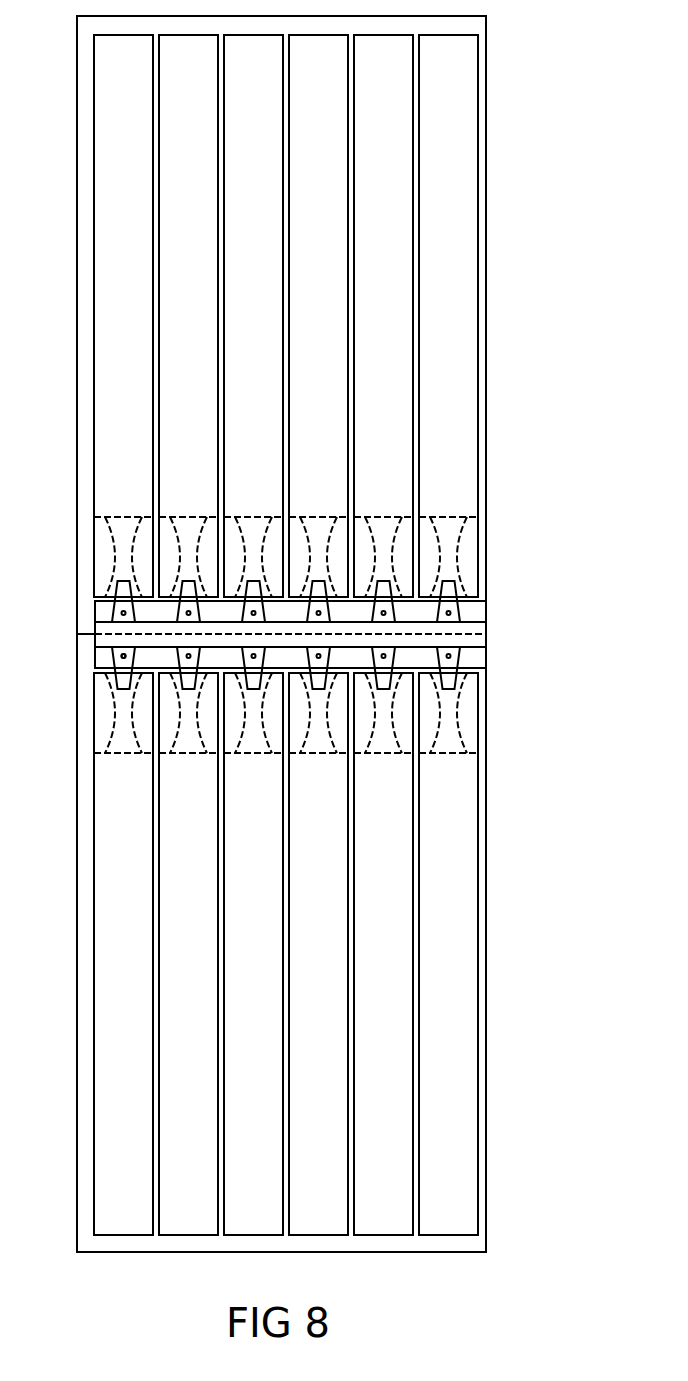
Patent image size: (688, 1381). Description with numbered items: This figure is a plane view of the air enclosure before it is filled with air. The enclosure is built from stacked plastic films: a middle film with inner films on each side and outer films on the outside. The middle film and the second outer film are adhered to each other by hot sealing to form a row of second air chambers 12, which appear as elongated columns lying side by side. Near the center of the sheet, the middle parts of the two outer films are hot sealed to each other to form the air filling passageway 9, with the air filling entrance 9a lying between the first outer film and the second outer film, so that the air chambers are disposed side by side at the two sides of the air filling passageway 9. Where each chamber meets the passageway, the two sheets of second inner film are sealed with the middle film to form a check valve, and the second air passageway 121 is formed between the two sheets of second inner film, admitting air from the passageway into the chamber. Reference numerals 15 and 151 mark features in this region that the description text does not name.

The second air chamber 12 is at (449, 340).
The second air passageway 121 is at (453, 535).
The air filling passageway 9 is at (457, 628).
The air filling entrance 9a is at (486, 640).
The tab 15 is at (130, 628).
The tab hole 151 is at (102, 635).